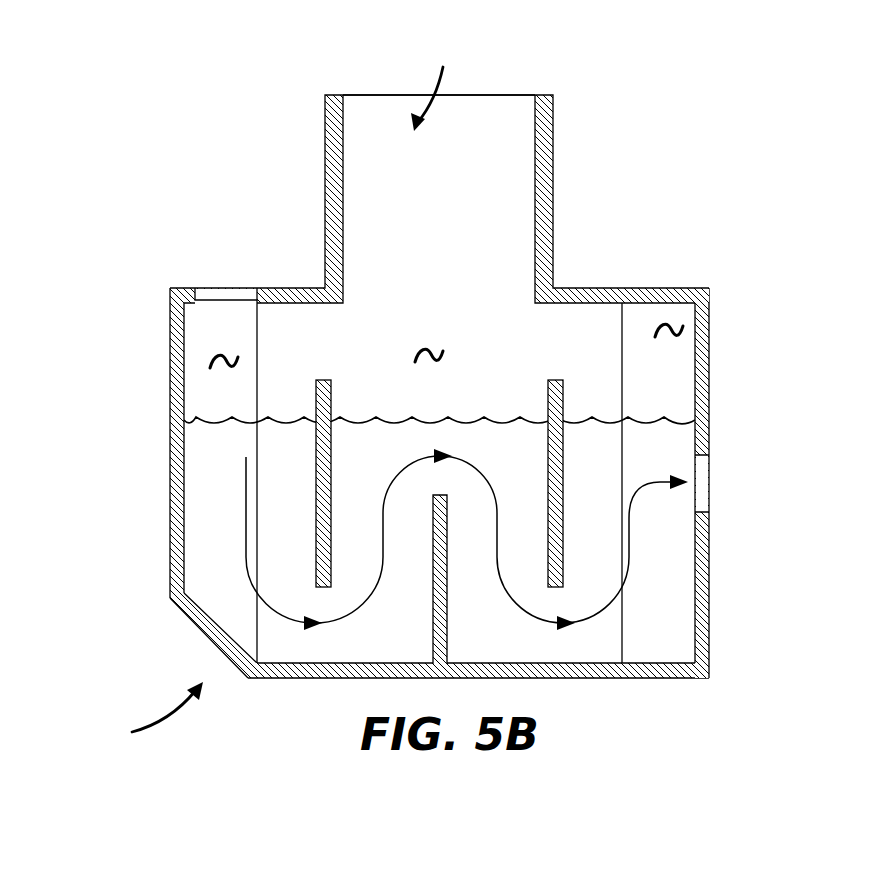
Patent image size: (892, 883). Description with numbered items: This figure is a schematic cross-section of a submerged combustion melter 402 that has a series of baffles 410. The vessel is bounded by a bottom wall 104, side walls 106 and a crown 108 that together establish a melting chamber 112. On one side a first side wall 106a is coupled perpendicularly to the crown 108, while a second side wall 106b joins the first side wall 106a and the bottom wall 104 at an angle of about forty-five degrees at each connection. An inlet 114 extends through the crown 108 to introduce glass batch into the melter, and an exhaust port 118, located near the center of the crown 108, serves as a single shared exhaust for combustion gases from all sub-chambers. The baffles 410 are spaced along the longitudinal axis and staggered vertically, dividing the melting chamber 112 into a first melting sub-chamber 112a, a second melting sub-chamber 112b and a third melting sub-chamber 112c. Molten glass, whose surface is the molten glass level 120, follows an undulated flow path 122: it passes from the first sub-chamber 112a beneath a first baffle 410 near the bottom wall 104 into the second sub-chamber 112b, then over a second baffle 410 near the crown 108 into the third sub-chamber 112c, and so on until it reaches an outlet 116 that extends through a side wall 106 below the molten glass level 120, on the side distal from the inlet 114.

The bottom wall 104 is at (670, 677).
The side wall 106 is at (708, 570).
The first side wall 106a is at (177, 543).
The second side wall 106b is at (207, 627).
The crown 108 is at (272, 290).
The melting chamber 112 is at (410, 284).
The first melting sub-chamber 112a is at (217, 368).
The second melting sub-chamber 112b is at (427, 353).
The third melting sub-chamber 112c is at (670, 330).
The inlet 114 is at (218, 290).
The outlet 116 is at (708, 482).
The exhaust port 118 is at (439, 87).
The molten glass level 120 is at (667, 418).
The undulated flow path 122 is at (383, 505).
The submerged combustion melter 402 is at (145, 714).
The baffle 410 is at (313, 397).